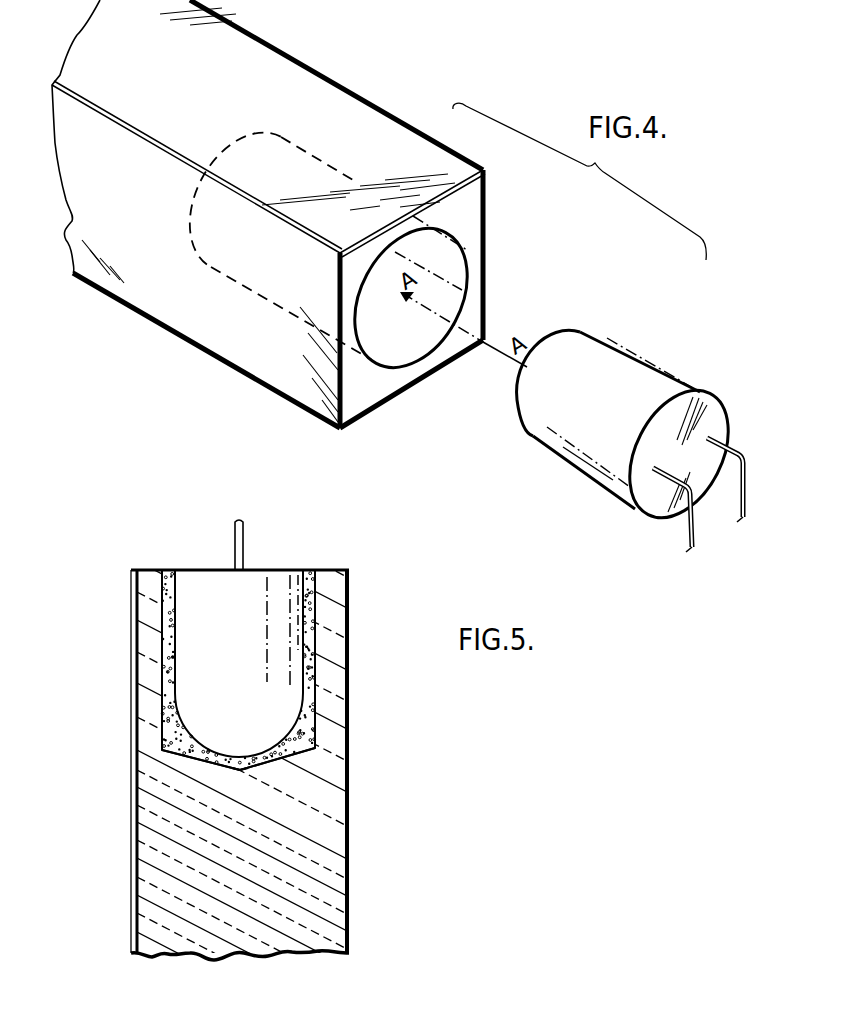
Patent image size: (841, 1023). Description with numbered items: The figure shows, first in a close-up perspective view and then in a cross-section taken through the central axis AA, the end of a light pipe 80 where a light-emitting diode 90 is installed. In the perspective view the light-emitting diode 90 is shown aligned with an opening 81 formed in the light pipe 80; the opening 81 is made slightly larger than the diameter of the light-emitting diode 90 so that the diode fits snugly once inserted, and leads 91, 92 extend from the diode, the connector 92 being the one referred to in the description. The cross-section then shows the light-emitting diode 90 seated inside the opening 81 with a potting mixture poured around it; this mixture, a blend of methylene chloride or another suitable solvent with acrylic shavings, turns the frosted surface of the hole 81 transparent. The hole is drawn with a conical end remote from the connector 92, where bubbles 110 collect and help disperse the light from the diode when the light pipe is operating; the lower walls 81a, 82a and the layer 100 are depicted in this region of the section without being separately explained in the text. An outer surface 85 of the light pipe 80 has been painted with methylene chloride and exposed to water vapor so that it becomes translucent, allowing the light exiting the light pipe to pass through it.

In FIG. 4, the light pipe 80 is at (285, 77).
In FIG. 5, the light pipe 80 is at (313, 803).
In FIG. 4, the opening 81 is at (353, 180).
In FIG. 5, the opening 81 is at (162, 647).
In FIG. 5, the bore bottom wall 81a is at (187, 763).
In FIG. 5, the conical recess 82a is at (265, 763).
In FIG. 5, the outer surface 85 is at (131, 608).
In FIG. 4, the light-emitting diode 90 is at (663, 363).
In FIG. 5, the light-emitting diode 90 is at (250, 632).
In FIG. 4, the lead 91 is at (748, 483).
In FIG. 4, the connector 92 is at (693, 527).
In FIG. 5, the connector 92 is at (243, 538).
In FIG. 5, the adhesive layer 100 is at (318, 723).
In FIG. 5, the bubbles 110 is at (222, 768).